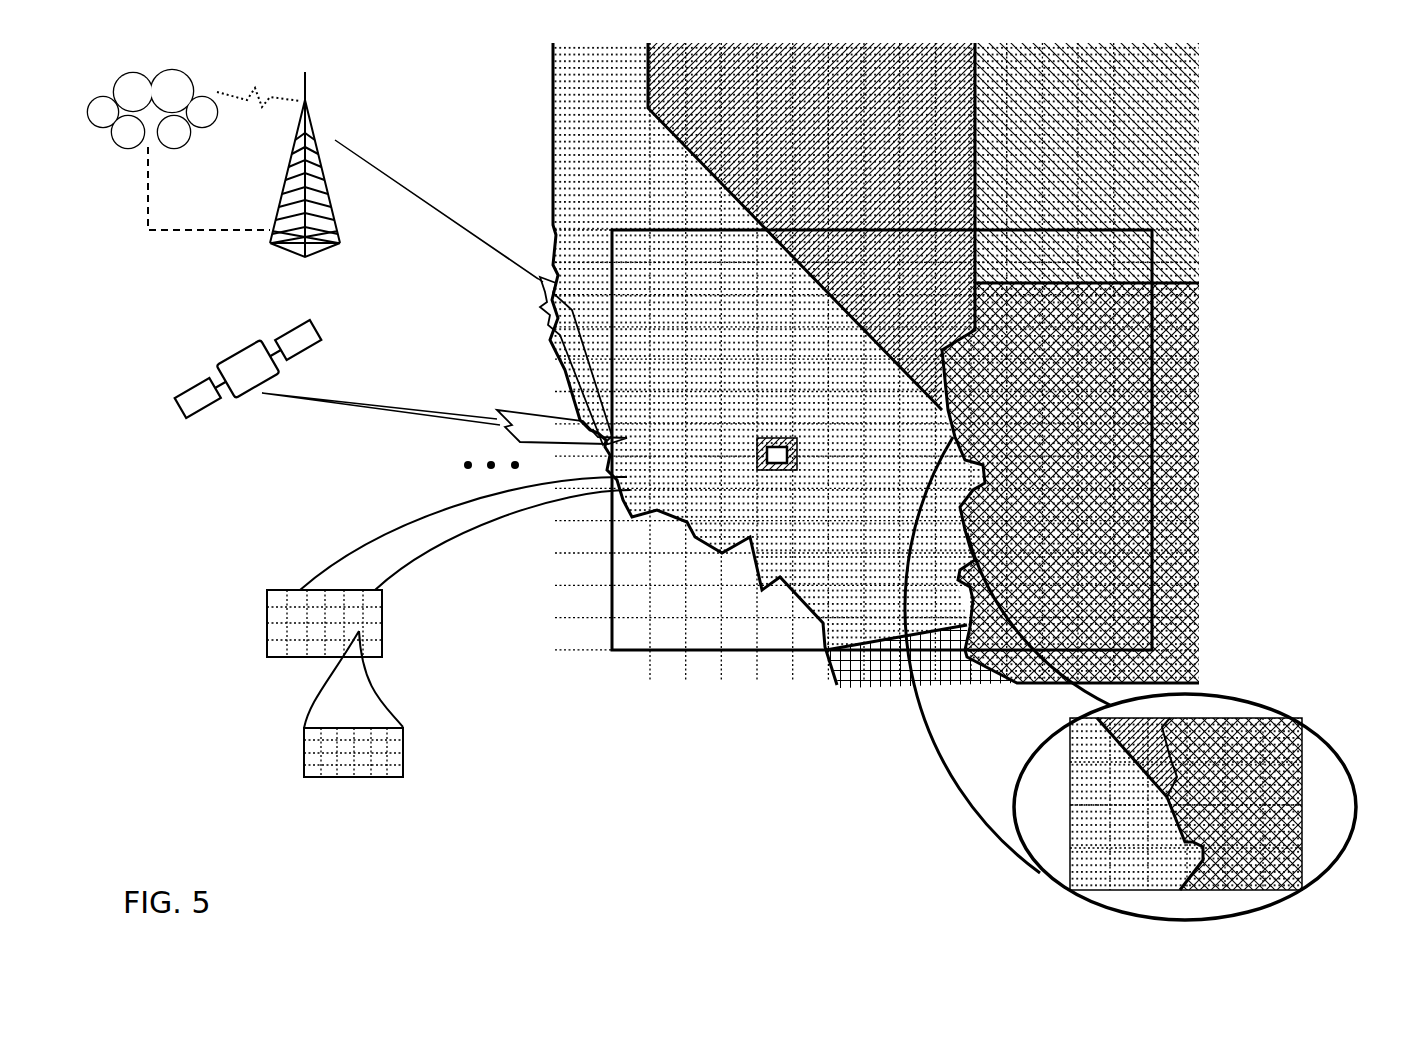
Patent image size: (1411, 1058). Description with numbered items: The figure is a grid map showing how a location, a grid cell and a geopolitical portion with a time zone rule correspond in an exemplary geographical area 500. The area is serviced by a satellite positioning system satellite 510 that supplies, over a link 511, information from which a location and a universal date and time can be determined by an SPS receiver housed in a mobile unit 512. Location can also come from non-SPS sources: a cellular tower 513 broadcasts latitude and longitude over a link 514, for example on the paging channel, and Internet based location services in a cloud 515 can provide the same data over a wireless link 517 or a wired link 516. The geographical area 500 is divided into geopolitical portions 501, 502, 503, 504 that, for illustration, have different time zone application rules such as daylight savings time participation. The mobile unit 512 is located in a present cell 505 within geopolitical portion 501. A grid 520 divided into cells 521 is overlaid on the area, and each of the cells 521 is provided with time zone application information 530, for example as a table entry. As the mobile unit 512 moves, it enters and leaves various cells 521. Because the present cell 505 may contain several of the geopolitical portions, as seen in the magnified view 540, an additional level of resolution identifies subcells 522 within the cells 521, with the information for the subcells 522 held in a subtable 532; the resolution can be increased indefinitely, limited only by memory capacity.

The geographical area 500 is at (1318, 120).
The geopolitical portion 501 is at (598, 80).
The geopolitical portion 502 is at (650, 112).
The geopolitical portion 503 is at (1147, 158).
The geopolitical portion 504 is at (1125, 402).
The present cell 505 is at (762, 470).
The satellite positioning system satellite 510 is at (240, 348).
The link 511 is at (380, 410).
The mobile unit 512 is at (780, 470).
The cellular tower 513 is at (318, 80).
The link 514 is at (393, 187).
The cloud 515 is at (132, 148).
The wired link 516 is at (165, 230).
The wireless link 517 is at (280, 100).
The grid 520 is at (600, 246).
The cells 521 is at (622, 377).
The subcells 522 is at (1095, 780).
The time zone application information 530 is at (280, 590).
The subtable 532 is at (304, 758).
The magnified view 540 is at (1243, 697).